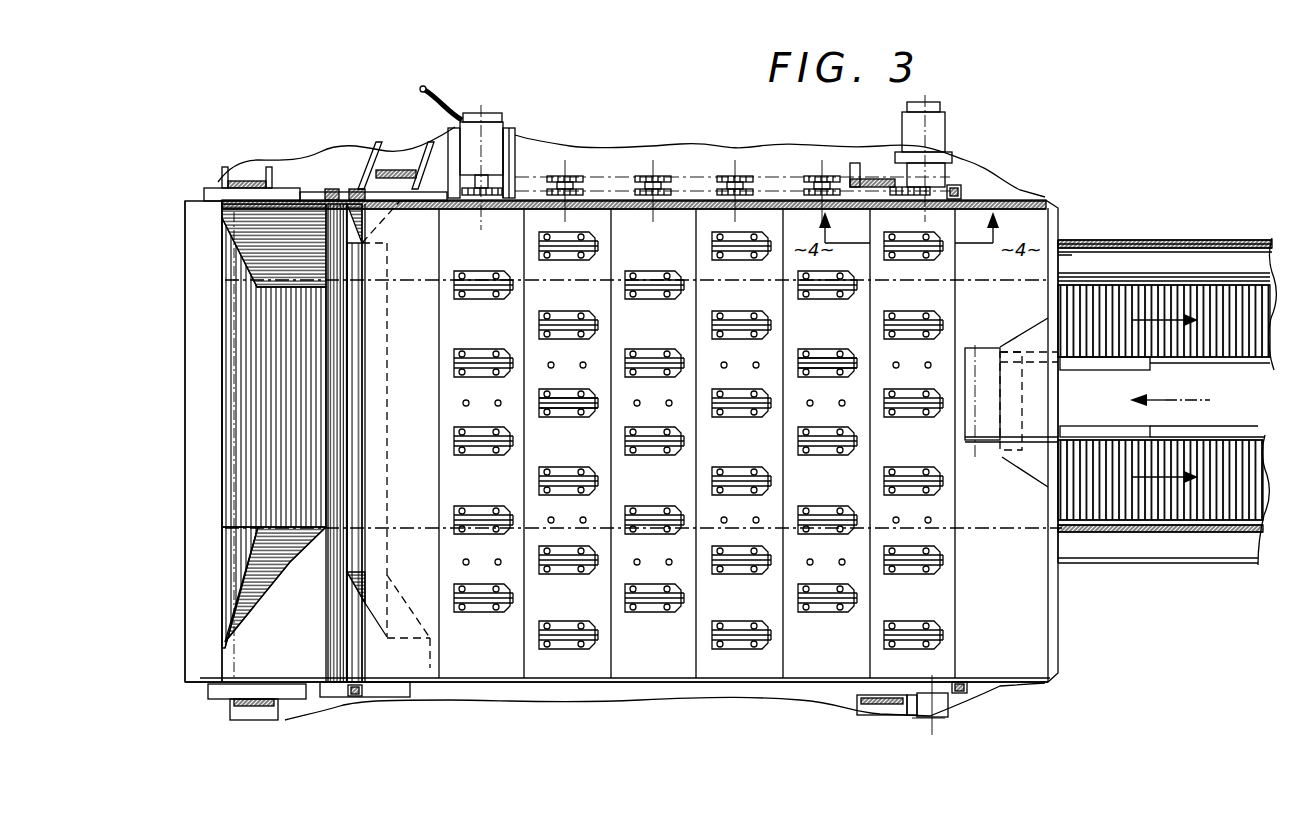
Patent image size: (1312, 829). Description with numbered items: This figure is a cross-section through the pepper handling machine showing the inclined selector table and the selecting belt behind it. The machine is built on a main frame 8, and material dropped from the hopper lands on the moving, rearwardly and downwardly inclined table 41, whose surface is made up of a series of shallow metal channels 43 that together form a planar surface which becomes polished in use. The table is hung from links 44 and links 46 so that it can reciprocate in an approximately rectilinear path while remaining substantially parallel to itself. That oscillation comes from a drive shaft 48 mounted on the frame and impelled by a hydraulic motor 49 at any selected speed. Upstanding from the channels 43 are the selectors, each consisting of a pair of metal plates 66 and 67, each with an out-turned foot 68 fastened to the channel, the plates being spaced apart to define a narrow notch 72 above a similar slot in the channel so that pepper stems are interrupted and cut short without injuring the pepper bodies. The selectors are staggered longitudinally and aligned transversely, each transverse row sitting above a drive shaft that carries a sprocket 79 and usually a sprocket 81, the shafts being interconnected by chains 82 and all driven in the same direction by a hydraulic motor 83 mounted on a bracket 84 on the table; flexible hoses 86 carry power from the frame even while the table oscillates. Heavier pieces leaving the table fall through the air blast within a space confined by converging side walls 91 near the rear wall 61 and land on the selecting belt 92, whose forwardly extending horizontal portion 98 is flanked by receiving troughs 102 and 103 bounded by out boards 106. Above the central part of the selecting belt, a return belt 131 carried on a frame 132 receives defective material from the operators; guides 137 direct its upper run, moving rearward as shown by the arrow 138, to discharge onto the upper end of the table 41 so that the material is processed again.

The main frame 8 is at (238, 180).
The table 41 is at (1058, 196).
The channels 43 is at (946, 302).
The links 44 is at (339, 203).
The links 46 is at (958, 188).
The drive shaft 48 is at (929, 719).
The hydraulic motor 49 is at (941, 140).
The rear wall 61 is at (239, 442).
The metal plate 66 is at (578, 386).
The metal plate 67 is at (566, 407).
The out-turned foot 68 is at (488, 511).
The notch 72 is at (568, 248).
The sprocket 79 is at (836, 190).
The sprocket 81 is at (810, 176).
The chains 82 is at (686, 177).
The hydraulic motor 83 is at (500, 129).
The bracket 84 is at (511, 173).
The flexible hoses 86 is at (441, 111).
The converging side walls 91 is at (294, 218).
The selecting belt 92 is at (262, 352).
The horizontal portion 98 is at (1208, 300).
The receiving trough 102 is at (1159, 541).
The receiving trough 103 is at (1147, 258).
The out boards 106 is at (1113, 229).
The return belt 131 is at (1250, 399).
The frame 132 is at (1244, 431).
The guides 137 is at (1069, 366).
The arrow 138 is at (1168, 395).